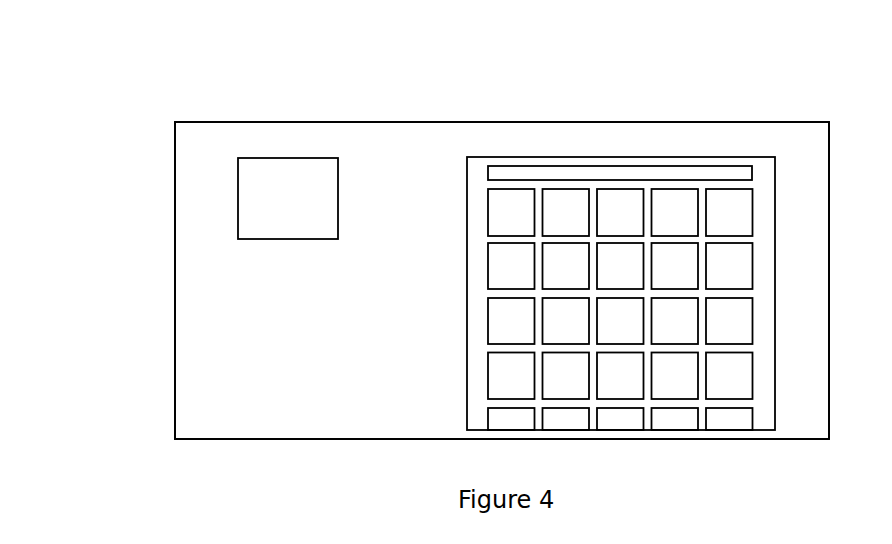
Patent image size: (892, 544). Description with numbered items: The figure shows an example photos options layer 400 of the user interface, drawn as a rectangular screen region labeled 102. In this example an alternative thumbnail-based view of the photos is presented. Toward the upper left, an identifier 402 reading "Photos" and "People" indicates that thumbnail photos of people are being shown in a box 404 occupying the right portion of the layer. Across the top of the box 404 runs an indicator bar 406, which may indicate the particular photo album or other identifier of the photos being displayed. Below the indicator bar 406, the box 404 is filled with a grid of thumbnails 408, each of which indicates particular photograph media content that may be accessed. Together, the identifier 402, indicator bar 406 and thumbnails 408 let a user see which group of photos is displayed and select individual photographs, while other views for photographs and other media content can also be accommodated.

The photos options layer 400 is at (166, 37).
The client device display 102 is at (502, 280).
The identifier 402 is at (329, 222).
The box 404 is at (768, 203).
The indicator bar 406 is at (492, 173).
The thumbnails 408 is at (502, 383).